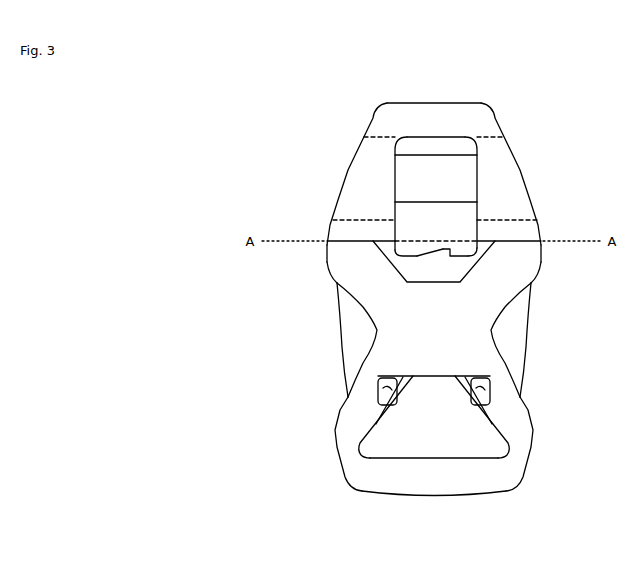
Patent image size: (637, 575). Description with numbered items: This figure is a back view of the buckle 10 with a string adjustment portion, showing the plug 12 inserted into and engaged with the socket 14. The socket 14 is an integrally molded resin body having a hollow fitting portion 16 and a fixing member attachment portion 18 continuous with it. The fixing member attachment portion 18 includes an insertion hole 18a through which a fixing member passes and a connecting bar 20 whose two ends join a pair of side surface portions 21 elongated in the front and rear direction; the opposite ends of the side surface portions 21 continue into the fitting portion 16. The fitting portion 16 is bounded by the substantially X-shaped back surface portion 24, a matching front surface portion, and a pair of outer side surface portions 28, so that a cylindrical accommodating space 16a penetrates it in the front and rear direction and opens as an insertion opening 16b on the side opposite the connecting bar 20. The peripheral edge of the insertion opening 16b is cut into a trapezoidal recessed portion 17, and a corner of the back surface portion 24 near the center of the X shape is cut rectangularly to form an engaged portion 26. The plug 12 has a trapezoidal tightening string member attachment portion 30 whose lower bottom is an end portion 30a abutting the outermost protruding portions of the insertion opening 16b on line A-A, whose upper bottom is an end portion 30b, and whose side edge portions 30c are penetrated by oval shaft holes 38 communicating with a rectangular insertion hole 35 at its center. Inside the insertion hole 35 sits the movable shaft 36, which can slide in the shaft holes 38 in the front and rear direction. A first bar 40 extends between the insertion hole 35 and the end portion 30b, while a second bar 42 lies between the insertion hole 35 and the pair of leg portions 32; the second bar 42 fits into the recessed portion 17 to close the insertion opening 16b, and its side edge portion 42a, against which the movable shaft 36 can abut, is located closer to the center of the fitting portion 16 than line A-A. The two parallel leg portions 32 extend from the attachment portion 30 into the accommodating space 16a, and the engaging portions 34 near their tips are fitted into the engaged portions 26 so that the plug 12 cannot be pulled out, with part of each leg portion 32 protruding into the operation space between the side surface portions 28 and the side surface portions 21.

The buckle with string adjustment portion 10 is at (284, 103).
The plug 12 is at (324, 215).
The socket 14 is at (353, 498).
The fitting portion 16 is at (480, 358).
The accommodating space 16a is at (400, 339).
The insertion opening 16b is at (358, 262).
The recessed portion 17 is at (470, 273).
The fixing member attachment portion 18 is at (440, 497).
The insertion hole 18a is at (470, 438).
The connecting bar 20 is at (403, 475).
The side surface portions 21 is at (340, 456).
The back surface portion 24 is at (463, 305).
The engaged portion 26 is at (492, 385).
The side surface portions 28 is at (327, 252).
The tightening string member attachment portion 30 is at (373, 120).
The end portion 30a is at (517, 238).
The end portion 30b is at (426, 102).
The side edge portions 30c is at (355, 158).
The leg portions 32 is at (340, 368).
The engaging portions 34 is at (378, 392).
The insertion hole 35 is at (415, 147).
The movable shaft 36 is at (453, 170).
The shaft holes 38 is at (367, 182).
The first bar 40 is at (448, 123).
The second bar 42 is at (433, 267).
The side edge portion 42a is at (418, 256).